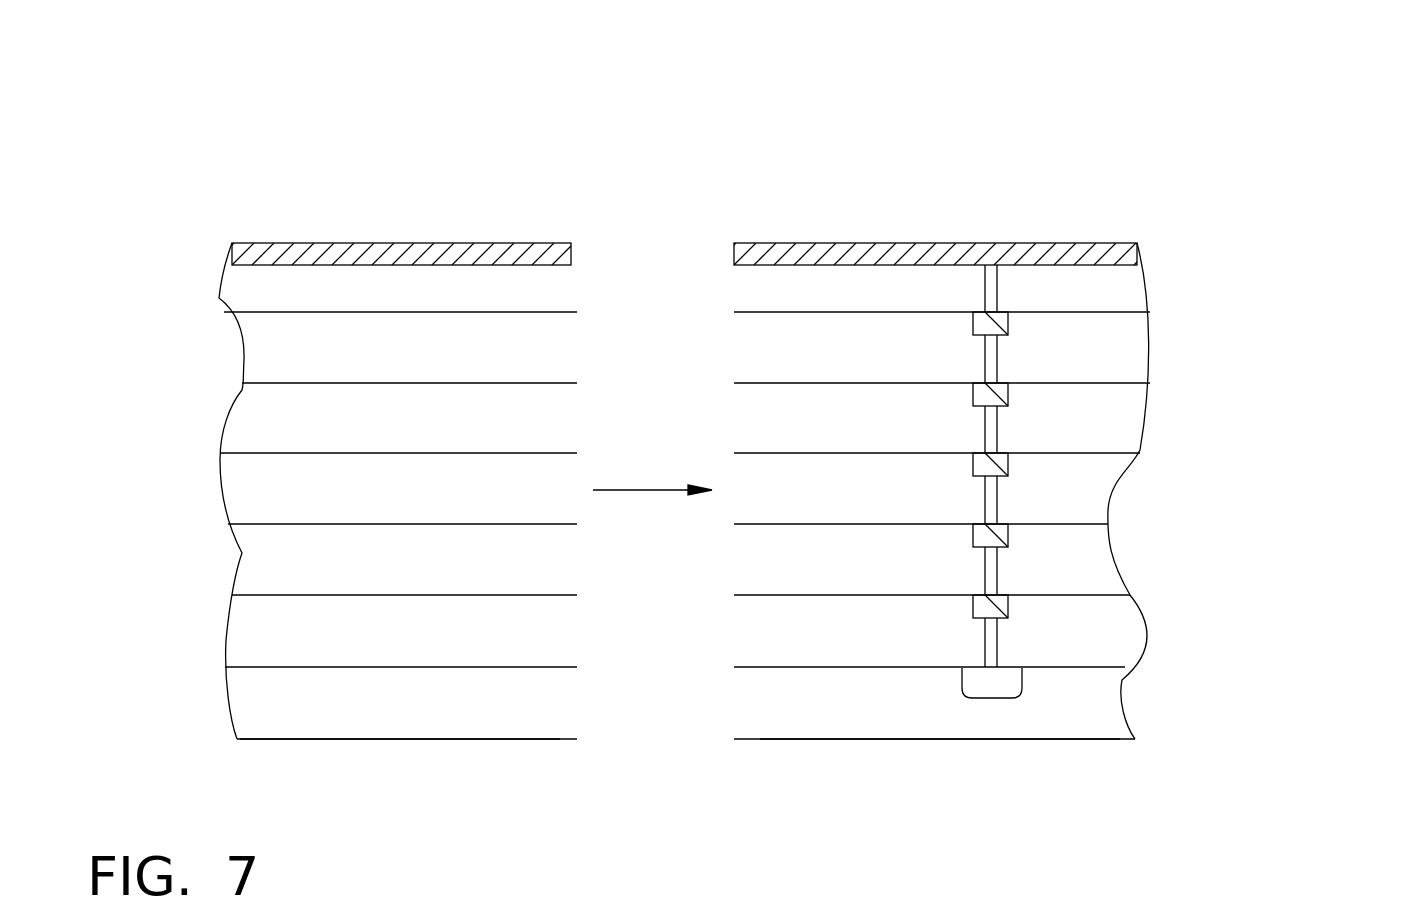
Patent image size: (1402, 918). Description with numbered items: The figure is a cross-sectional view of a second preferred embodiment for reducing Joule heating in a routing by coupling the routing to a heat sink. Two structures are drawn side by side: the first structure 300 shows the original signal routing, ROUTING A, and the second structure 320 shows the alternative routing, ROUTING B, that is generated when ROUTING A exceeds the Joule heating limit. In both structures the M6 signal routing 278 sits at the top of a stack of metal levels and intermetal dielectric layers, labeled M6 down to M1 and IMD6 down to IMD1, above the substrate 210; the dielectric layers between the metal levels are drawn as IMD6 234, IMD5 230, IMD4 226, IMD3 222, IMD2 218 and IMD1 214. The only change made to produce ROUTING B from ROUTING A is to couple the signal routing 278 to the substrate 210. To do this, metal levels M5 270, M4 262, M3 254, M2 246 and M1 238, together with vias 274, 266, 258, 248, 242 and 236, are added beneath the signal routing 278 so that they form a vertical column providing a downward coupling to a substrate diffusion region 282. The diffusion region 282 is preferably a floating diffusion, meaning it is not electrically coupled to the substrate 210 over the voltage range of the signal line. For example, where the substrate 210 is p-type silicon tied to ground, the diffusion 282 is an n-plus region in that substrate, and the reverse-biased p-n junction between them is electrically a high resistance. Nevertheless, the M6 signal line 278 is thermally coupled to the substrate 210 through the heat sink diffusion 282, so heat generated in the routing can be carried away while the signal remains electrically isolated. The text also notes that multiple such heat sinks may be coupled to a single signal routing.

The interconnect structure with routing A 300 is at (518, 150).
The interconnect structure with routing B 320 is at (1038, 148).
The signal routing 278 is at (571, 257).
The via 274 is at (993, 272).
The IMD6 dielectric layer 234 is at (255, 293).
The metal level M5 270 is at (1008, 325).
The IMD5 dielectric layer 230 is at (255, 363).
The via 266 is at (998, 372).
The metal level M4 262 is at (1008, 400).
The IMD4 dielectric layer 226 is at (255, 432).
The via 258 is at (998, 448).
The metal level M3 254 is at (1008, 468).
The IMD3 dielectric layer 222 is at (255, 502).
The via 248 is at (985, 502).
The metal level M2 246 is at (1008, 540).
The IMD2 dielectric layer 218 is at (255, 573).
The via 242 is at (985, 578).
The metal level M1 238 is at (1008, 610).
The IMD1 dielectric layer 214 is at (255, 643).
The via 236 is at (985, 650).
The substrate diffusion region 282 is at (1020, 690).
The substrate 210 is at (248, 690).